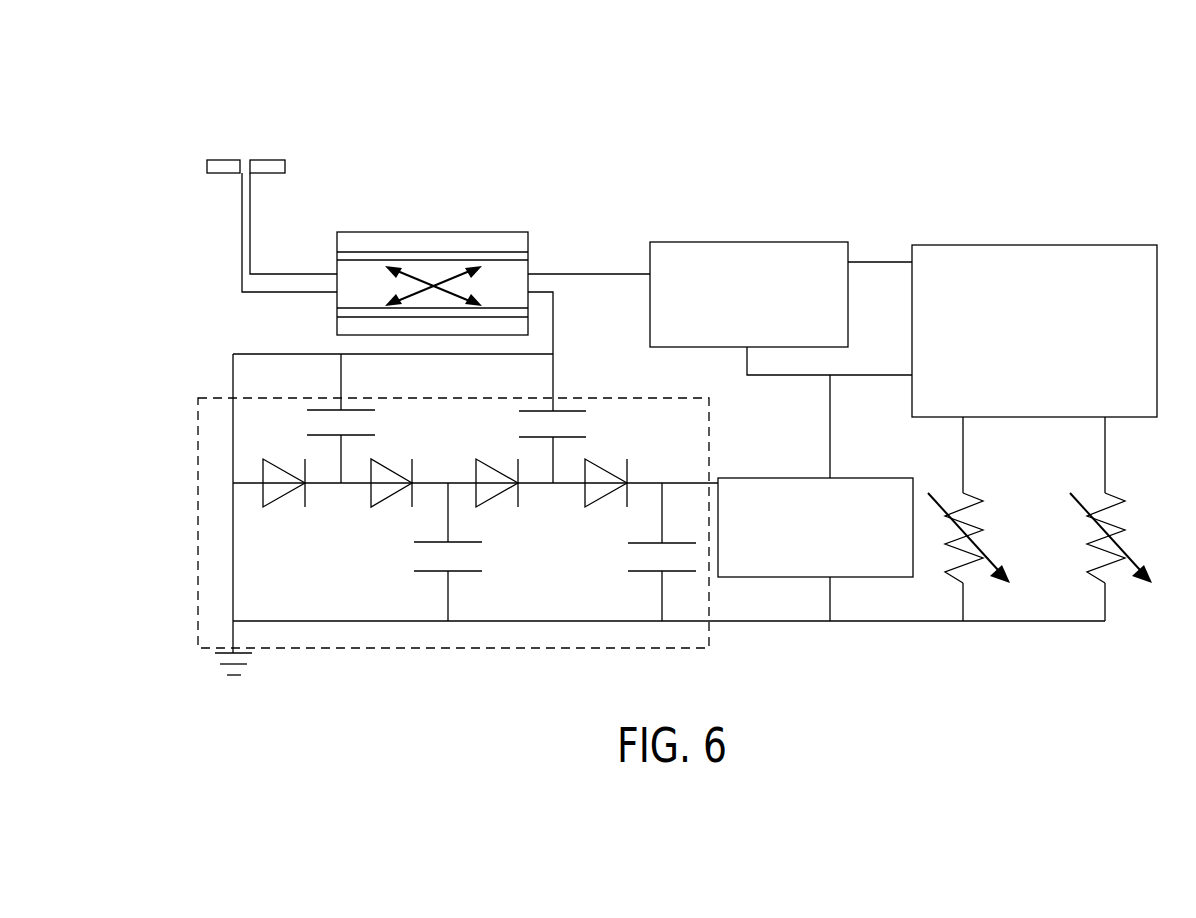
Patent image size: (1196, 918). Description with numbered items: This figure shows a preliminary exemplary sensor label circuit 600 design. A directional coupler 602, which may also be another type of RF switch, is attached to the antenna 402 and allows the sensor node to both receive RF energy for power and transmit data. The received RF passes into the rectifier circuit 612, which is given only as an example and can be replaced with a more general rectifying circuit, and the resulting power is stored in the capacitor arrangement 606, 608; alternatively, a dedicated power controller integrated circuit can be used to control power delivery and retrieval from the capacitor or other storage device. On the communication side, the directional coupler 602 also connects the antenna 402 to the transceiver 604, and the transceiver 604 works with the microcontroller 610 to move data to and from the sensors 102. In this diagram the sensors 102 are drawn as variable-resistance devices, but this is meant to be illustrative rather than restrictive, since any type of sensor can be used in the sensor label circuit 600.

The sensor label circuit 600 is at (905, 203).
The antenna 402 is at (263, 160).
The directional coupler 602 is at (447, 232).
The transceiver 604 is at (690, 242).
The capacitor arrangement 606 is at (597, 623).
The capacitor arrangement 608 is at (780, 577).
The microcontroller 610 is at (1062, 245).
The rectifier circuit 612 is at (201, 398).
The sensors 102 is at (1108, 455).